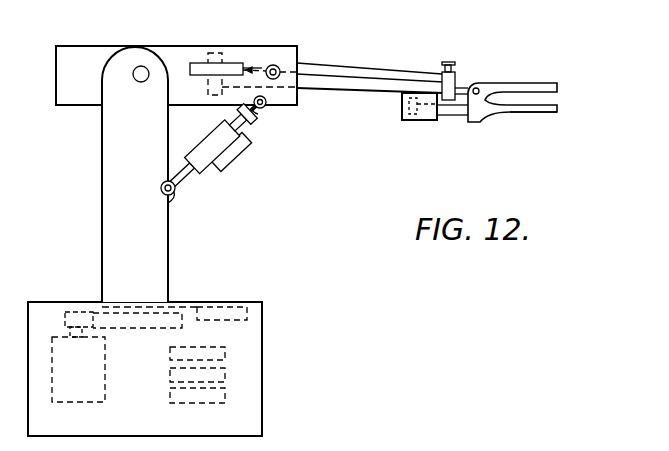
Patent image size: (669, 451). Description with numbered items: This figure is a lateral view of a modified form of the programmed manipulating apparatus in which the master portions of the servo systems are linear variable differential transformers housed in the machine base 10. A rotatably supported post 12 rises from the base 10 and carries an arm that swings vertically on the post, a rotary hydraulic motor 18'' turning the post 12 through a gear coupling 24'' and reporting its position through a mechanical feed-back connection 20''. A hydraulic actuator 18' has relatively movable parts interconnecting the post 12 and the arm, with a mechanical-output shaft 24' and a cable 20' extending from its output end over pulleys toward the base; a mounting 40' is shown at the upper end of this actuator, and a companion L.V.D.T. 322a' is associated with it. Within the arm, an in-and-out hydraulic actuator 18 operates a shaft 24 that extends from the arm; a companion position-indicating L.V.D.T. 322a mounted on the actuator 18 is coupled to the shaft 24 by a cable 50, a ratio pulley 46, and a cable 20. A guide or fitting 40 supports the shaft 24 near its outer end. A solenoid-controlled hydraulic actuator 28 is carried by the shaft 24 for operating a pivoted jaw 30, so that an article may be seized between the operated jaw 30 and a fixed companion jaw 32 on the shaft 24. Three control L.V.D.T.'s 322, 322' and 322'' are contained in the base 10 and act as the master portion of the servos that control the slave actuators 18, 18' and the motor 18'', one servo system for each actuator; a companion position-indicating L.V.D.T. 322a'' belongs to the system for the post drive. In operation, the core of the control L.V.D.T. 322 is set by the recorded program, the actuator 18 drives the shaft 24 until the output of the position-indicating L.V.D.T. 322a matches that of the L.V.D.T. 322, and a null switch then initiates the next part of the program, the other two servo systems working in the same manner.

The machine base 10 is at (252, 323).
The post 12 is at (113, 190).
The hydraulic actuator 18 is at (176, 59).
The cable 20 is at (376, 67).
The shaft 24 is at (406, 102).
The solenoid-controlled hydraulic actuator 28 is at (423, 120).
The jaw 30 is at (548, 112).
The fixed companion jaw 32 is at (541, 83).
The clamp block 40 is at (432, 71).
The ratio pulley 46 is at (275, 65).
The cable 50 is at (255, 65).
The position indicating L.V.D.T. 322a is at (232, 54).
The mechanical-output shaft 24' is at (203, 119).
The pivot block 40' is at (270, 116).
The cable 20' is at (259, 137).
The hydraulic actuator 18' is at (200, 161).
The position indicating L.V.D.T. 322a' is at (253, 164).
The gear coupling 24'' is at (70, 305).
The mechanical feed-back connection 20'' is at (149, 302).
The position indicating L.V.D.T. 322a'' is at (230, 298).
The rotary hydraulic motor 18'' is at (90, 384).
The L.V.D.T. 322'' is at (242, 360).
The L.V.D.T. 322' is at (239, 382).
The control L.V.D.T. 322 is at (209, 411).